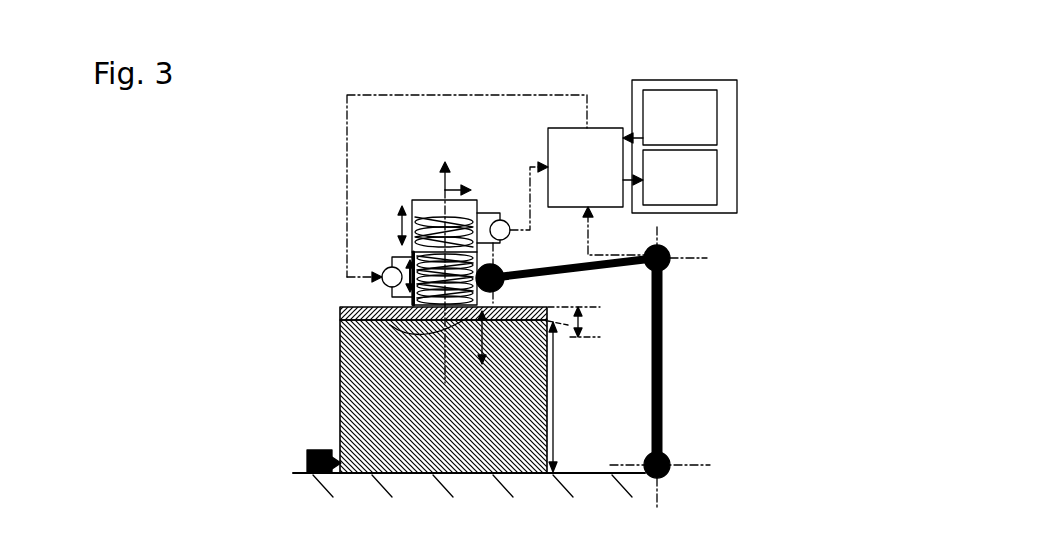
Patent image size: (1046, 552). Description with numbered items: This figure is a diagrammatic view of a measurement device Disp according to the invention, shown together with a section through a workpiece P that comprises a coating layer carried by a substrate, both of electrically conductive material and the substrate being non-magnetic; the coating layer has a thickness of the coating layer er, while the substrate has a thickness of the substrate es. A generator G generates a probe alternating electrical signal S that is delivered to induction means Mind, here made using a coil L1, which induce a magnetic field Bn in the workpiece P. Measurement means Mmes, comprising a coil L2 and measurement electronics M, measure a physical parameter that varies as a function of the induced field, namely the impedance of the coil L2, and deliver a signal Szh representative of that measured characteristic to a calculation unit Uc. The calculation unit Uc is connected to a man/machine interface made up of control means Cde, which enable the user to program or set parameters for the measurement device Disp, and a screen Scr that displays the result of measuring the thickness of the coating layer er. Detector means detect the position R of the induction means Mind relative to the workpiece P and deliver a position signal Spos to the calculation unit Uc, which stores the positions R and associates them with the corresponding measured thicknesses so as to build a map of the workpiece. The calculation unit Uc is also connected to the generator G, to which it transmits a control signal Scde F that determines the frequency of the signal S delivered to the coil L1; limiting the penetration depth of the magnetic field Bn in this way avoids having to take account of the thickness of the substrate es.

The measurement device Disp is at (224, 201).
The measurement means Mmes is at (428, 200).
The coil L2 is at (410, 203).
The coil L1 is at (410, 250).
The probe alternating electrical signal S is at (360, 250).
The position R is at (450, 188).
The measurement electronics M is at (493, 258).
The generator G is at (380, 272).
The signal Szh is at (527, 196).
The control signal Scde F is at (467, 175).
The calculation unit Uc is at (585, 167).
The control means Cde is at (670, 117).
The screen Scr is at (670, 177).
The position signal Spos is at (614, 231).
The induction means Mind is at (477, 300).
The magnetic field Bn is at (382, 316).
The workpiece P is at (377, 360).
The thickness of the coating layer er is at (597, 322).
The thickness of the substrate es is at (569, 396).